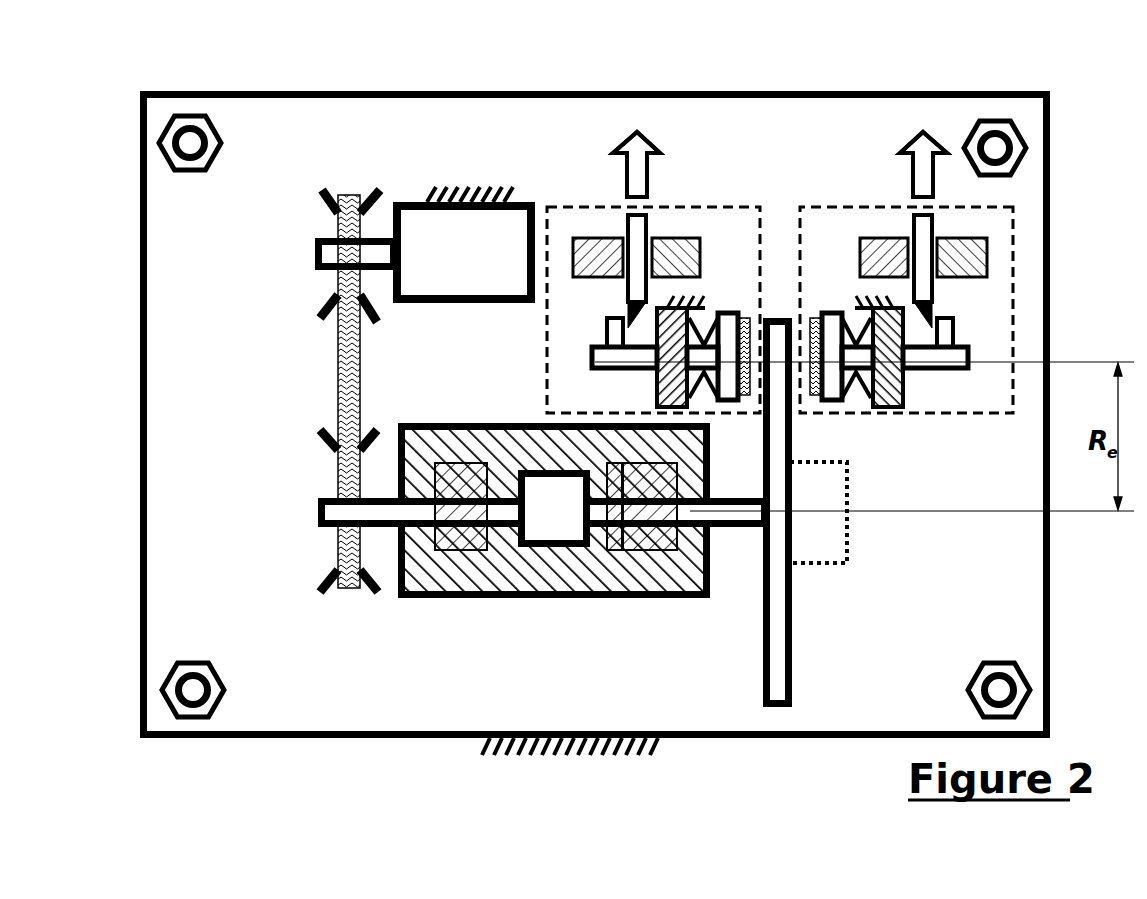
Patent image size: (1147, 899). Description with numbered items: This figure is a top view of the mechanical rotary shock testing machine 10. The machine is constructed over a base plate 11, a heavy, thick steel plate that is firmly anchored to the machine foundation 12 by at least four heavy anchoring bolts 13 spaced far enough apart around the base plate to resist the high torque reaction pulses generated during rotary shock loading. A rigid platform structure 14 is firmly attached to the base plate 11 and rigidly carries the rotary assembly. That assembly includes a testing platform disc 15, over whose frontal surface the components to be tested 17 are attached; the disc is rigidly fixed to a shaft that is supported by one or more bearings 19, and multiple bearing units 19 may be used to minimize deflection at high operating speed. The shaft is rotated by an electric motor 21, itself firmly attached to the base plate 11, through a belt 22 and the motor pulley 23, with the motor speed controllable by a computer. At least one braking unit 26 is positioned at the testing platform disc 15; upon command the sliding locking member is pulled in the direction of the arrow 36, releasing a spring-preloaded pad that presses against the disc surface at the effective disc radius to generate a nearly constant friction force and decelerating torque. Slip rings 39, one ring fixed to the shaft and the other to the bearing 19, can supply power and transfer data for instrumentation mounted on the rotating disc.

The mechanical rotary shock testing machine 10 is at (1082, 99).
The base plate 11 is at (282, 685).
The machine foundation 12 is at (498, 775).
The anchoring bolts 13 is at (188, 143).
The rigid platform structure 14 is at (428, 573).
The testing platform disc 15 is at (797, 718).
The components to be tested 17 is at (822, 535).
The bearings 19 is at (465, 527).
The electric motor 21 is at (458, 242).
The belt 22 is at (343, 367).
The motor pulley 23 is at (317, 177).
The braking units 26 is at (837, 195).
The arrow 36 is at (635, 163).
The slip rings 39 is at (614, 517).